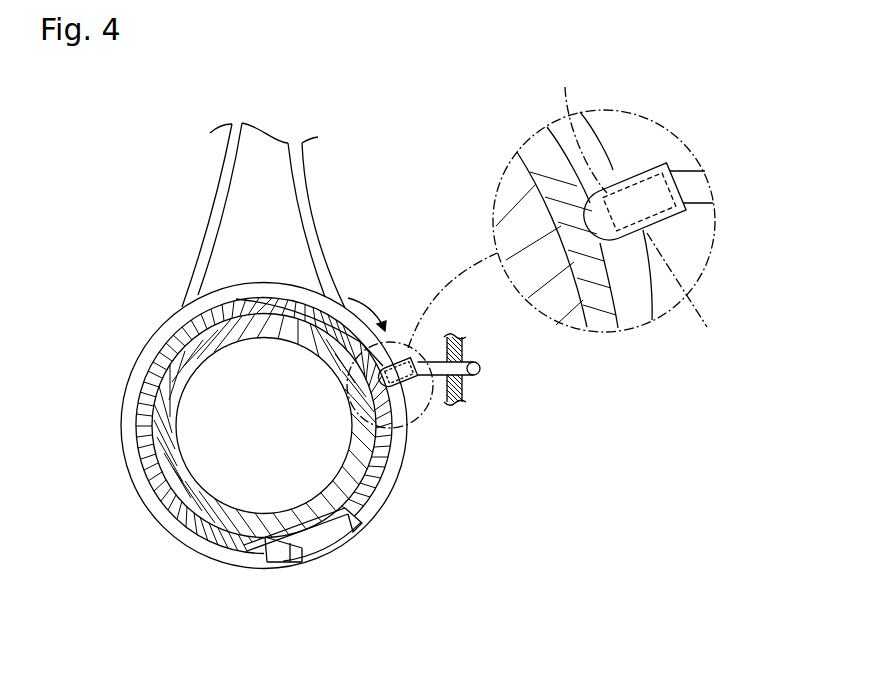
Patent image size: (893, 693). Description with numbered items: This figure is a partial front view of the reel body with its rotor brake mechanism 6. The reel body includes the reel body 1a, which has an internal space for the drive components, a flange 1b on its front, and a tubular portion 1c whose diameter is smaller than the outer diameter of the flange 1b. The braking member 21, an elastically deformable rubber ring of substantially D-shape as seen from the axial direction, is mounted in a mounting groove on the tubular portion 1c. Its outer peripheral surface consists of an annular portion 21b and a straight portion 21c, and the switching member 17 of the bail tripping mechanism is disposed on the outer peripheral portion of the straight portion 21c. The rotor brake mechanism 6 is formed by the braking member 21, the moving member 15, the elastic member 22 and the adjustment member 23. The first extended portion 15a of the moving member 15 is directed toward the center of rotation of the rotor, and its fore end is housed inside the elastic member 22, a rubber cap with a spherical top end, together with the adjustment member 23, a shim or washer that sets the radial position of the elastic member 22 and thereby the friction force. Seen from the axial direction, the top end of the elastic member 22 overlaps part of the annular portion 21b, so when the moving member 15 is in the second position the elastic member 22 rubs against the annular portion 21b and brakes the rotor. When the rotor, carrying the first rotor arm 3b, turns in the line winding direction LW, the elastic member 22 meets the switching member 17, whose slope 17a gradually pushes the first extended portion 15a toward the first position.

The reel body 1a is at (205, 266).
The flange 1b is at (153, 343).
The tubular portion 1c is at (163, 425).
The braking member 21 is at (152, 473).
The annular portion 21b is at (163, 518).
The straight portion 21c is at (360, 527).
The switching member 17 is at (328, 558).
The slope 17a is at (338, 530).
The rotor brake mechanism 6 is at (395, 397).
The first rotor arm 3b is at (463, 400).
The line winding direction LW is at (376, 304).
The elastic member 22 is at (647, 167).
The moving member 15 is at (697, 208).
The first extended portion 15a is at (633, 213).
The adjustment member 23 is at (627, 195).